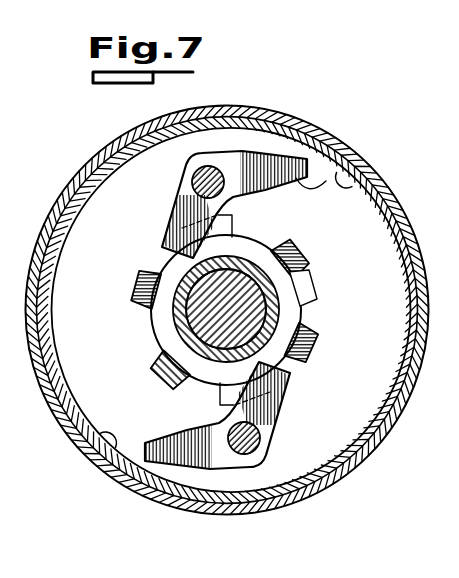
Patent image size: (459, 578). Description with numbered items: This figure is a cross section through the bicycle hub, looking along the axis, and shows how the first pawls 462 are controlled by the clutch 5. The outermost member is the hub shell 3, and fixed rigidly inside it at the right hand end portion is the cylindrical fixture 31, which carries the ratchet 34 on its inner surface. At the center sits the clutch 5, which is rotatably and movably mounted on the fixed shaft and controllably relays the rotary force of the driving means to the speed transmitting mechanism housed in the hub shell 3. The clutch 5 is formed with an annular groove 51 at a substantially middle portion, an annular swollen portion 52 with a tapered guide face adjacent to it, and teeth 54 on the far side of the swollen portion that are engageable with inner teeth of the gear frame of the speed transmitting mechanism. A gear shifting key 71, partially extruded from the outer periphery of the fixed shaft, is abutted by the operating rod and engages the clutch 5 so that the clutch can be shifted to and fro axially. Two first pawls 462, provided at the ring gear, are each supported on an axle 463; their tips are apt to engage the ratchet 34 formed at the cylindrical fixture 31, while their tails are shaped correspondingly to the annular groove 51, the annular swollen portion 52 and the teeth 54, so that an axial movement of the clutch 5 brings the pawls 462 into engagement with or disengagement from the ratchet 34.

The hub shell 3 is at (227, 297).
The cylindrical fixture 31 is at (313, 168).
The ratchet 34 is at (347, 190).
The clutch 5 is at (310, 263).
The annular groove 51 is at (258, 327).
The gear shifting key 71 is at (313, 335).
The annular swollen portion 52 is at (284, 366).
The teeth 54 is at (162, 382).
The first pawls 462 is at (300, 152).
The axles 463 is at (213, 168).